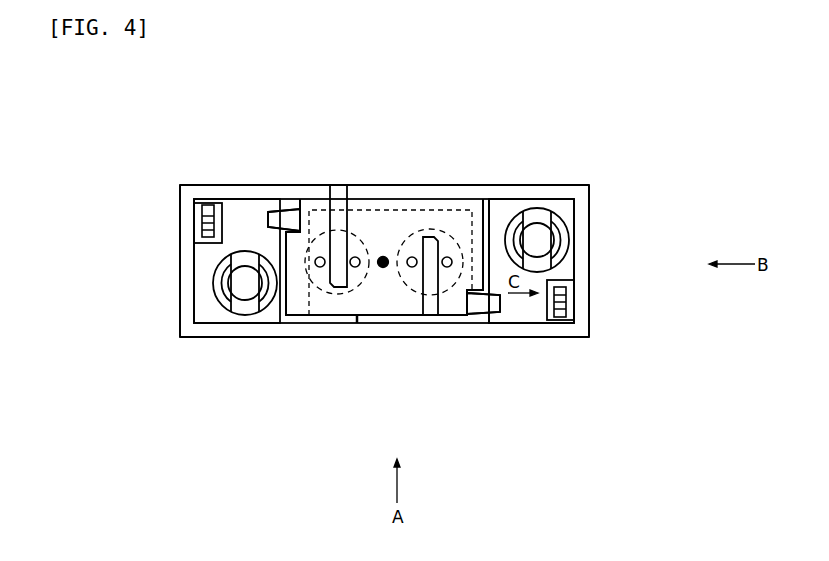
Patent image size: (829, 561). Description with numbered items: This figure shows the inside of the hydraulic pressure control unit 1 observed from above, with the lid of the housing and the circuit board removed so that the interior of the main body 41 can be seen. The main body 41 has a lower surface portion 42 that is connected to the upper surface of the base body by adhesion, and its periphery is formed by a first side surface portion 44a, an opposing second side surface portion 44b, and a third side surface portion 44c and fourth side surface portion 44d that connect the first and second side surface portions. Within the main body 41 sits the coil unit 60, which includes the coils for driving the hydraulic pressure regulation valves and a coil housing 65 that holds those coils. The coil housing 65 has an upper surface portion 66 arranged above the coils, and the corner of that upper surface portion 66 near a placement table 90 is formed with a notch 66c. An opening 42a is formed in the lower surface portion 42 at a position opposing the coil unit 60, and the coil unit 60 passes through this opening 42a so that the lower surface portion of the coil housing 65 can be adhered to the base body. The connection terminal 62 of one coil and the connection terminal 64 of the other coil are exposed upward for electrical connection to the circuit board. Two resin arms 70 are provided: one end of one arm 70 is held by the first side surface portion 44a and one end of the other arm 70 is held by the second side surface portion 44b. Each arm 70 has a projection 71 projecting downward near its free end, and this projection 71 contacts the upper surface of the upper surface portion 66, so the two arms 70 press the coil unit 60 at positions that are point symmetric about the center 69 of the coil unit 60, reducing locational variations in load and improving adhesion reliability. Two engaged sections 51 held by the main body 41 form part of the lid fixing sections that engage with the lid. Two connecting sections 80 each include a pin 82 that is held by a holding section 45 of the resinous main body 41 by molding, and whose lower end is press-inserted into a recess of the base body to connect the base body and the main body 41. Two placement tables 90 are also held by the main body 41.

The hydraulic pressure control unit 1 is at (574, 134).
The main body 41 is at (240, 324).
The lower surface portion 42 is at (516, 207).
The opening 42a is at (483, 206).
The first side surface portion 44a is at (386, 338).
The second side surface portion 44b is at (383, 186).
The third side surface portion 44c is at (180, 273).
The fourth side surface portion 44d is at (590, 260).
The holding section 45 is at (194, 212).
The engaged section 51 is at (217, 297).
The coil unit 60 is at (356, 320).
The connection terminal 62 is at (320, 268).
The connection terminal 64 is at (447, 268).
The coil housing 65 is at (296, 212).
The upper surface portion 66 is at (356, 200).
The notch 66c is at (286, 211).
The center 69 is at (384, 257).
The arm 70 is at (333, 229).
The projection 71 is at (434, 234).
The connecting section 80 is at (189, 229).
The pin 82 is at (203, 236).
The placement table 90 is at (268, 221).